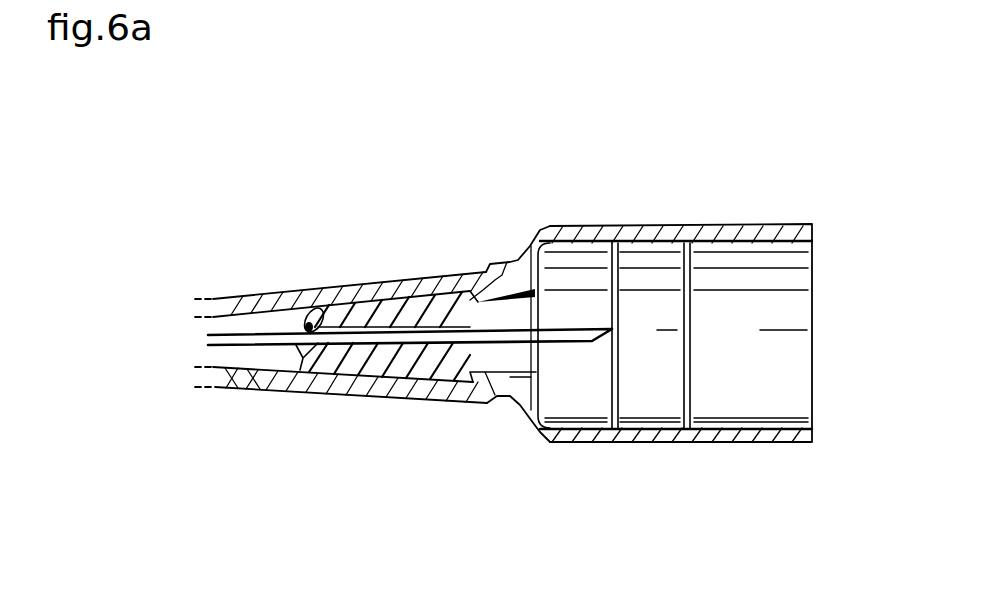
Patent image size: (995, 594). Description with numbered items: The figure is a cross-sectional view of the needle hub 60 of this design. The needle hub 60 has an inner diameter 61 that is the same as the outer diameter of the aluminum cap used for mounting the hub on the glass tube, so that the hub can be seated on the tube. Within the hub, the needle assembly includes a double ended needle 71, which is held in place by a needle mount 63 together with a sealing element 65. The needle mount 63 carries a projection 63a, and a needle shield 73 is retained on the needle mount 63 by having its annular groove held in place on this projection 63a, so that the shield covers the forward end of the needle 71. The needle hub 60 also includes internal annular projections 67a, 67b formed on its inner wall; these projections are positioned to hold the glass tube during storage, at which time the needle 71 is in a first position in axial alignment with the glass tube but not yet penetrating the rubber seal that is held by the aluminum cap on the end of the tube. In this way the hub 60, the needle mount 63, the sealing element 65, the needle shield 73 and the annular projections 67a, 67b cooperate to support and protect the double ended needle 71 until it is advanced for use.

The needle hub 60 is at (398, 182).
The inner diameter 61 is at (782, 418).
The needle mount 63 is at (343, 388).
The projection 63a is at (462, 401).
The sealing element 65 is at (287, 388).
The internal annular projection 67a is at (640, 428).
The internal annular projection 67b is at (717, 426).
The double ended needle 71 is at (420, 394).
The needle shield 73 is at (233, 389).